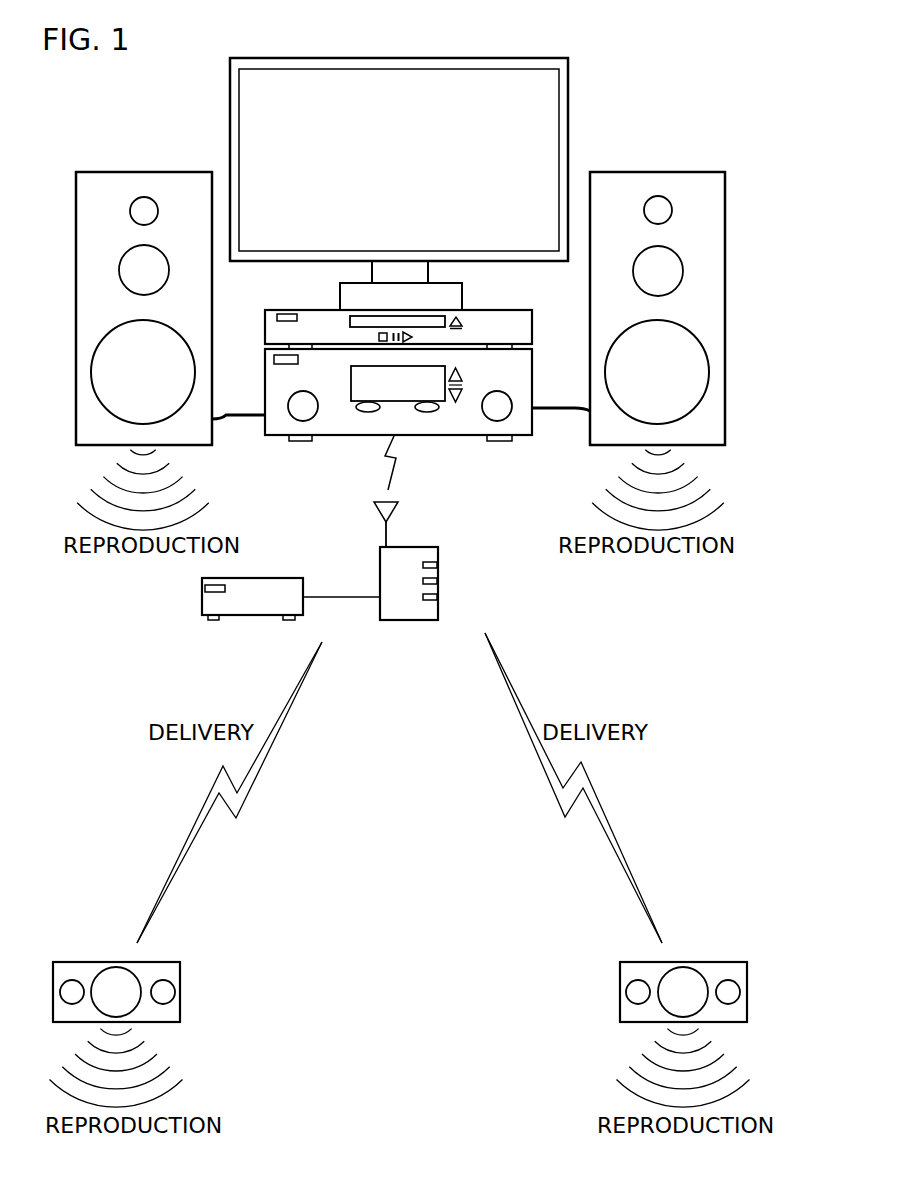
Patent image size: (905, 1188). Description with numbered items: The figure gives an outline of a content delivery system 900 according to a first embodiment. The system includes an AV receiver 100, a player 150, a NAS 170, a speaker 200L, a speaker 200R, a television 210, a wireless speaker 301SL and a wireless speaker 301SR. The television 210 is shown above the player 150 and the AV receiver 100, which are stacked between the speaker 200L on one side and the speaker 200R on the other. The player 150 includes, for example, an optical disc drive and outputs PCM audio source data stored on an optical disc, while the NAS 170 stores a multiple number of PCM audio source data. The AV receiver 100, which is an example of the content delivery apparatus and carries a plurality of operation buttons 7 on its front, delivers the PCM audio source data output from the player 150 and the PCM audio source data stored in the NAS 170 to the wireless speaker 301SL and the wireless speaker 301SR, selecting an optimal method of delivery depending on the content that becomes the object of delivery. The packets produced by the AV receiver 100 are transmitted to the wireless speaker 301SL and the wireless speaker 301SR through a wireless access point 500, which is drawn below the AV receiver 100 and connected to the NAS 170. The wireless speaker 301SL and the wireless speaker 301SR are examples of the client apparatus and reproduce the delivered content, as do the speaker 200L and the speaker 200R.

The content delivery system 900 is at (722, 71).
The television 210 is at (568, 58).
The speaker 200L is at (176, 171).
The speaker 200R is at (698, 172).
The player 150 is at (520, 311).
The AV receiver 100 is at (525, 363).
The operation buttons 7 is at (492, 412).
The wireless access point 500 is at (438, 547).
The NAS 170 is at (303, 578).
The wireless speaker 301SL is at (181, 962).
The wireless speaker 301SR is at (762, 943).